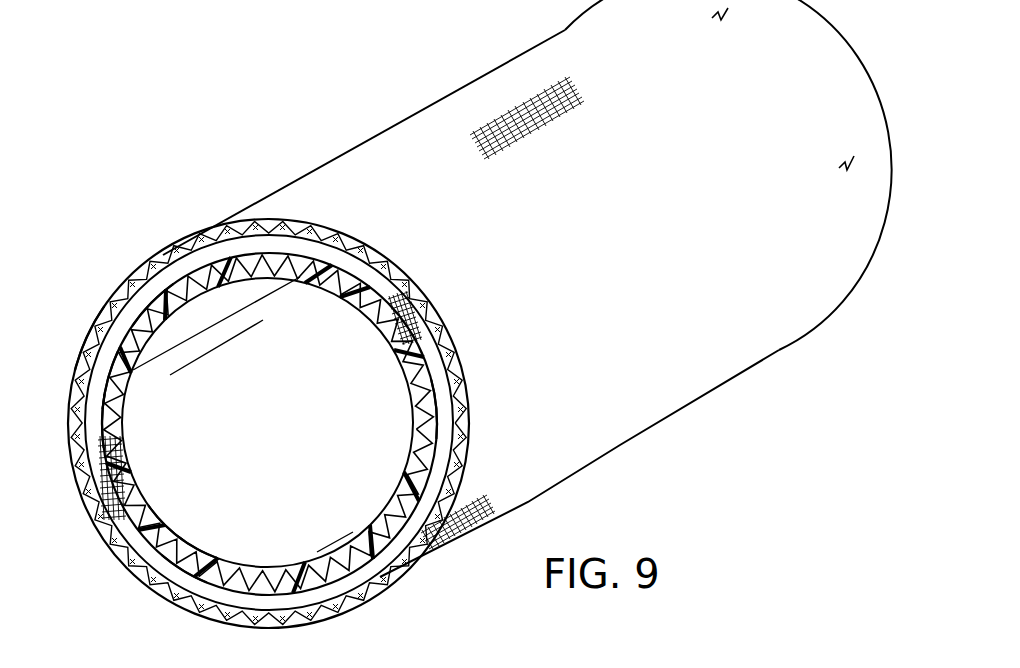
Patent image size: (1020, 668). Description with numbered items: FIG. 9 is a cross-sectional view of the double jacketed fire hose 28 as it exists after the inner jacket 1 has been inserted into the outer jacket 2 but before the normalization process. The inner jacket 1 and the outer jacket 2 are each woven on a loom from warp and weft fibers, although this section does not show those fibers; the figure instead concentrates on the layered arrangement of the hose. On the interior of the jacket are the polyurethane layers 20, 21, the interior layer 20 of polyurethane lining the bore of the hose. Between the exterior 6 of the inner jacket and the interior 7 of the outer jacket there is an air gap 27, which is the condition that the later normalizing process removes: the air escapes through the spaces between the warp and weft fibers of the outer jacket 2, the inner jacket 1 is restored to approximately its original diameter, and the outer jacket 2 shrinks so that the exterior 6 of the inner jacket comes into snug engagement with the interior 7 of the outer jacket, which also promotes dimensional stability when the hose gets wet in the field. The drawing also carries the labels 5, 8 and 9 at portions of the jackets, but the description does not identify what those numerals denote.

The inner jacket 1 is at (261, 258).
The outer jacket 2 is at (162, 253).
The reinforcing layer 5 is at (112, 445).
The exterior of the inner jacket 6 is at (112, 370).
The interior of the outer jacket 7 is at (130, 545).
The outer braid 8 is at (98, 325).
The inner braid 9 is at (433, 408).
The interior layer of polyurethane 20 is at (157, 540).
The polyurethane layer 21 is at (184, 569).
The air gap 27 is at (140, 303).
The double jacketed fire hose 28 is at (215, 202).